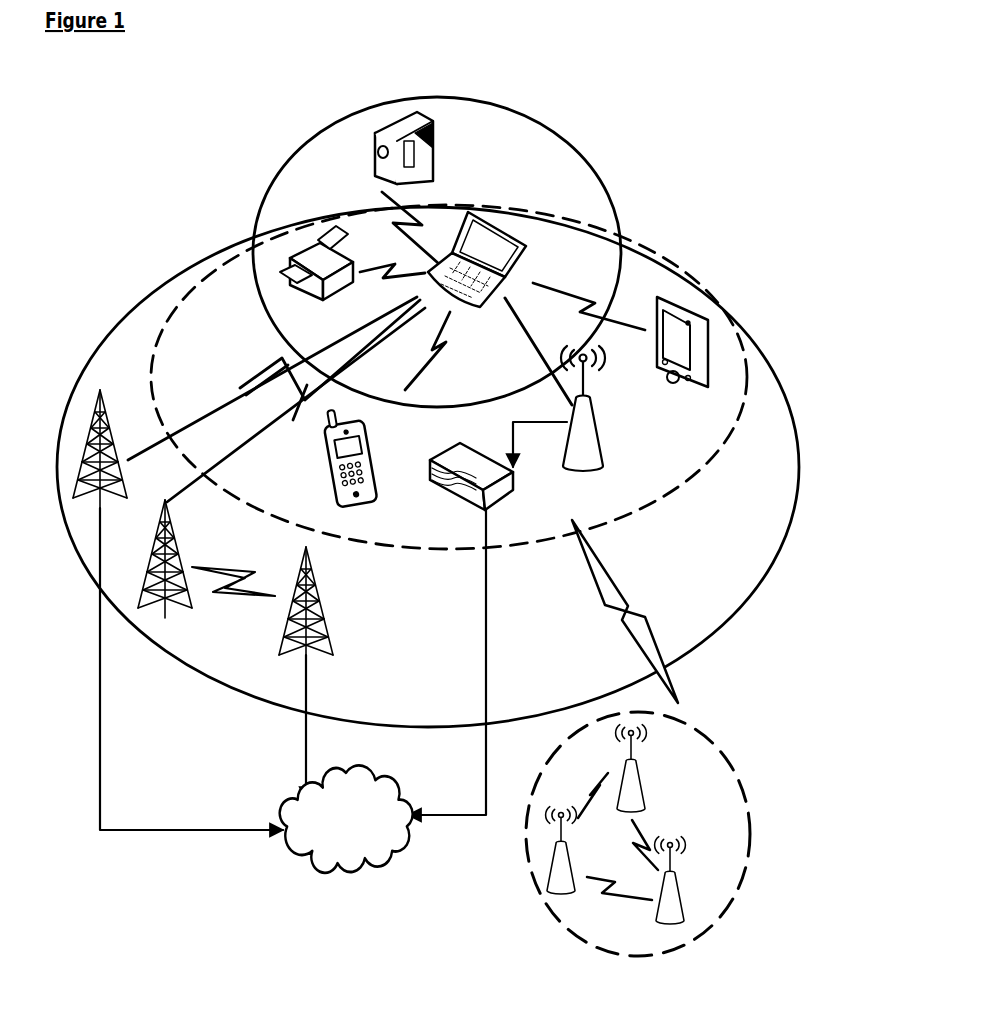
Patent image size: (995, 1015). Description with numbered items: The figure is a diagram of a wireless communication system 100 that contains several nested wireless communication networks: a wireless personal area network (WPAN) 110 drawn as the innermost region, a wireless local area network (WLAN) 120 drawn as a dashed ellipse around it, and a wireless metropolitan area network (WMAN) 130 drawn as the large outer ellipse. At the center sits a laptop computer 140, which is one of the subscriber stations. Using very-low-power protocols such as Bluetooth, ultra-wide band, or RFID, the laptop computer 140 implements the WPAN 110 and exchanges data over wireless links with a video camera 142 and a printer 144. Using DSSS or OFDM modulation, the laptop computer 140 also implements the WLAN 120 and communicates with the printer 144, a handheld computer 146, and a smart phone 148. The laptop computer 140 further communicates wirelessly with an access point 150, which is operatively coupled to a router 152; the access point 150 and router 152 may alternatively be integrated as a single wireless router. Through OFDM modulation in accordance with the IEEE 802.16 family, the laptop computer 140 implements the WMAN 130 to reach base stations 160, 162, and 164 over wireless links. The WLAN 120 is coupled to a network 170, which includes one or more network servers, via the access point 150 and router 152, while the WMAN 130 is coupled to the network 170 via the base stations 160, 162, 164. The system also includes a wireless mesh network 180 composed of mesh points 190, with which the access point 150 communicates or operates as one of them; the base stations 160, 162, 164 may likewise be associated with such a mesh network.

The wireless communication system 100 is at (633, 103).
The wireless personal area network (WPAN) 110 is at (253, 227).
The wireless local area network (WLAN) 120 is at (198, 295).
The wireless metropolitan area network (WMAN) 130 is at (135, 307).
The laptop computer 140 is at (503, 218).
The video camera 142 is at (440, 162).
The printer 144 is at (346, 290).
The handheld computer 146 is at (692, 392).
The smart phone 148 is at (372, 505).
The access point (AP) 150 is at (600, 468).
The router 152 is at (500, 508).
The base station 160 is at (97, 418).
The base station 162 is at (183, 562).
The base station 164 is at (325, 626).
The network 170 is at (403, 790).
The wireless mesh network 180 is at (722, 761).
The mesh points (MPs) 190 is at (670, 812).